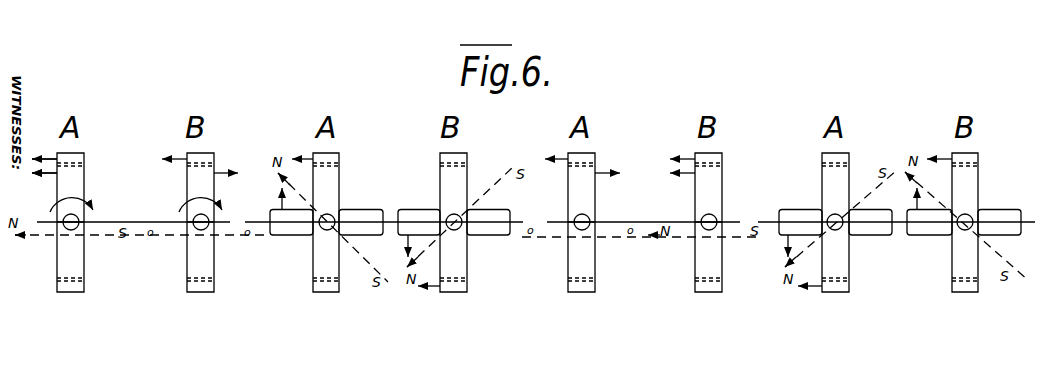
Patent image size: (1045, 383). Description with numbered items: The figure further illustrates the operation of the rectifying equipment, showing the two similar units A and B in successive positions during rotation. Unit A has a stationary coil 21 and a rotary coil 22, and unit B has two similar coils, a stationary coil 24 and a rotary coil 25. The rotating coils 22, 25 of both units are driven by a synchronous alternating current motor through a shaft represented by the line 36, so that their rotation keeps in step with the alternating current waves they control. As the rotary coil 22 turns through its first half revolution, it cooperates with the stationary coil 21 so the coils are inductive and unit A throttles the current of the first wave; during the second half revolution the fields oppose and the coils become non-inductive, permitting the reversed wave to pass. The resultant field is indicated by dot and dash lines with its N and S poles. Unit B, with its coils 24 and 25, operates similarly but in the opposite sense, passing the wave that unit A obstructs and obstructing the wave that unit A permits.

The stationary coil 21 is at (72, 160).
The rotary coil 22 is at (84, 181).
The stationary coil 24 is at (202, 160).
The rotary coil 25 is at (214, 188).
The shaft 36 is at (37, 222).